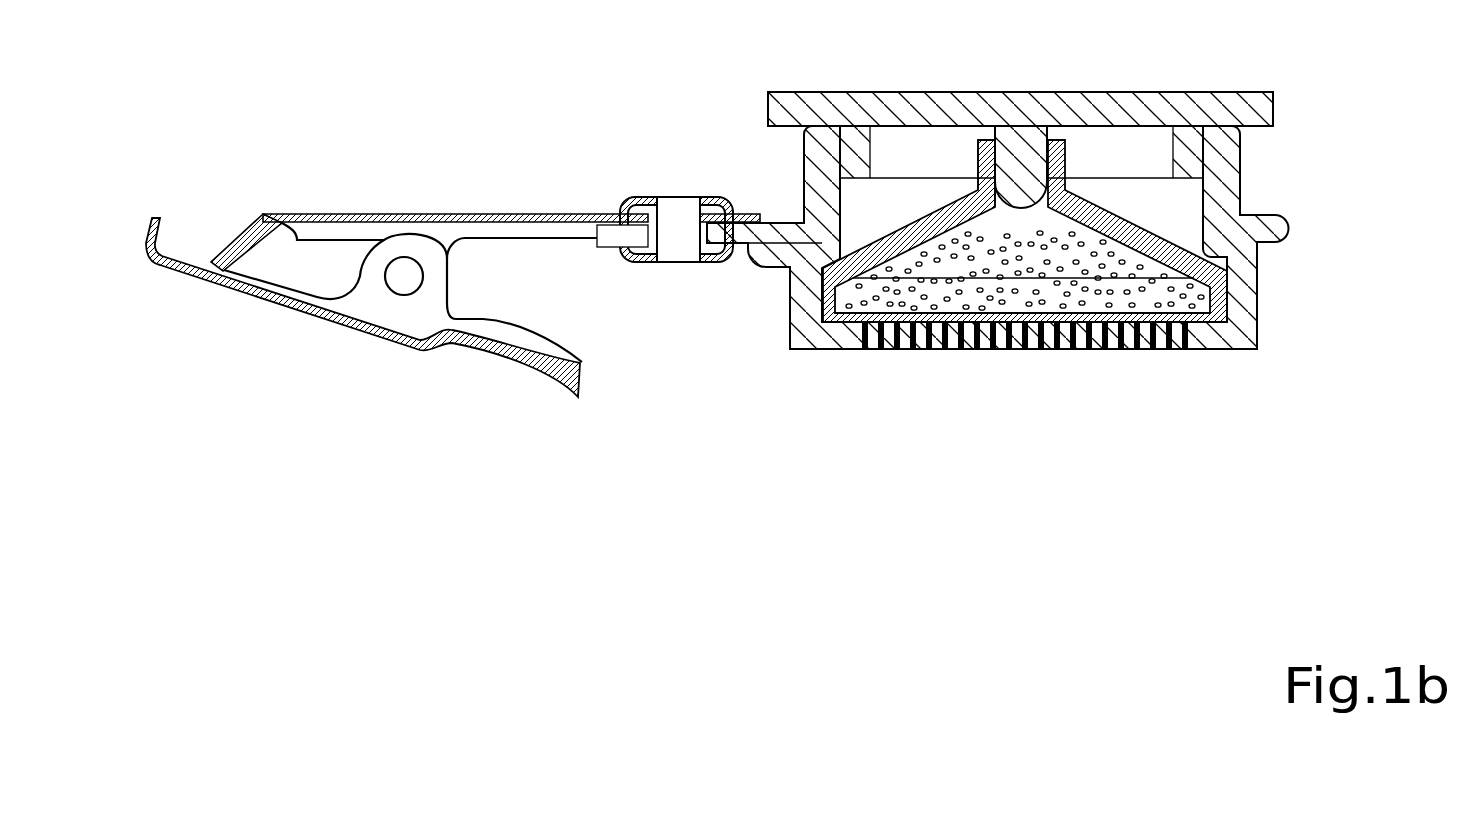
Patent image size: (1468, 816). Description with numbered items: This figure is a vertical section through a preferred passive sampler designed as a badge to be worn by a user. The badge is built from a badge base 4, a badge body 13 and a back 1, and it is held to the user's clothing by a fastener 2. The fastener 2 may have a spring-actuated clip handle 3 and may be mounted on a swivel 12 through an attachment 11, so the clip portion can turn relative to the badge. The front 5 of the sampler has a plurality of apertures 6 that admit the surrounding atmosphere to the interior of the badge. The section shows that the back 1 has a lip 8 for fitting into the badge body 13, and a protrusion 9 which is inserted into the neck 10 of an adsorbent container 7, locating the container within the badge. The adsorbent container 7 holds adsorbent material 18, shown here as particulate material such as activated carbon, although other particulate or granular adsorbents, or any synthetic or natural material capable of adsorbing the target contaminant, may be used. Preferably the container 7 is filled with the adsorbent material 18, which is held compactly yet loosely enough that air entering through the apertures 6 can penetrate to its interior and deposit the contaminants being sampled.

The back 1 is at (1150, 92).
The fastener 2 is at (338, 215).
The spring-actuated clip handle 3 is at (340, 326).
The badge base 4 is at (1259, 295).
The front 5 is at (1152, 347).
The apertures 6 is at (932, 353).
The adsorbent container 7 is at (840, 283).
The lip 8 is at (803, 157).
The protrusion 9 is at (1020, 160).
The neck 10 is at (965, 157).
The attachment 11 is at (753, 247).
The swivel 12 is at (670, 192).
The badge body 13 is at (1243, 150).
The adsorbent material 18 is at (1021, 310).